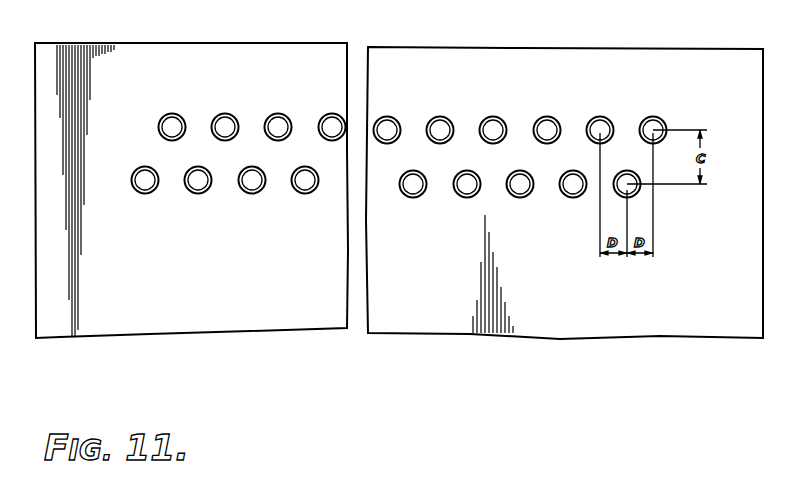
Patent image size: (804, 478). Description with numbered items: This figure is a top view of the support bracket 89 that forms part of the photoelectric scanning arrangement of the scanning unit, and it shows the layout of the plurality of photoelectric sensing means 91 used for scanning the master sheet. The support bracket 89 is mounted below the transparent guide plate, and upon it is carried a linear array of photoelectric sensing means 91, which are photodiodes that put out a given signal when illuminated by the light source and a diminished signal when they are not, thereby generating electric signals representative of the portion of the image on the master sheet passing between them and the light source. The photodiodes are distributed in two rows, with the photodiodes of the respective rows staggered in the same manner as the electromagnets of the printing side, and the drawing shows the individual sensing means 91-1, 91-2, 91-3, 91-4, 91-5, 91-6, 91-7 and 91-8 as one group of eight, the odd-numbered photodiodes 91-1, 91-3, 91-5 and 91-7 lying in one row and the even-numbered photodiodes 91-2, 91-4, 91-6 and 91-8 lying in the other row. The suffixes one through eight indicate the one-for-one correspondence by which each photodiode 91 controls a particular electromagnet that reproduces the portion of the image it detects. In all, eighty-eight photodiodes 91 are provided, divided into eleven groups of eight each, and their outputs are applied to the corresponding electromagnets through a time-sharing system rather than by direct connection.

The support bracket 89 is at (576, 47).
The photoelectric sensing means 91 is at (547, 118).
The photodiode 91-1 is at (146, 193).
The photodiode 91-2 is at (172, 125).
The photodiode 91-3 is at (198, 193).
The photodiode 91-4 is at (225, 116).
The photodiode 91-5 is at (253, 193).
The photodiode 91-6 is at (278, 116).
The photodiode 91-7 is at (306, 191).
The photodiode 91-8 is at (332, 116).